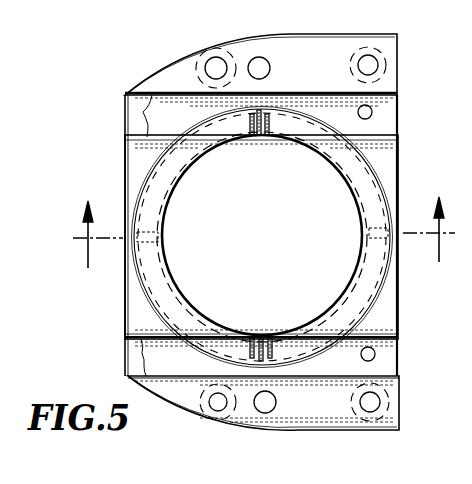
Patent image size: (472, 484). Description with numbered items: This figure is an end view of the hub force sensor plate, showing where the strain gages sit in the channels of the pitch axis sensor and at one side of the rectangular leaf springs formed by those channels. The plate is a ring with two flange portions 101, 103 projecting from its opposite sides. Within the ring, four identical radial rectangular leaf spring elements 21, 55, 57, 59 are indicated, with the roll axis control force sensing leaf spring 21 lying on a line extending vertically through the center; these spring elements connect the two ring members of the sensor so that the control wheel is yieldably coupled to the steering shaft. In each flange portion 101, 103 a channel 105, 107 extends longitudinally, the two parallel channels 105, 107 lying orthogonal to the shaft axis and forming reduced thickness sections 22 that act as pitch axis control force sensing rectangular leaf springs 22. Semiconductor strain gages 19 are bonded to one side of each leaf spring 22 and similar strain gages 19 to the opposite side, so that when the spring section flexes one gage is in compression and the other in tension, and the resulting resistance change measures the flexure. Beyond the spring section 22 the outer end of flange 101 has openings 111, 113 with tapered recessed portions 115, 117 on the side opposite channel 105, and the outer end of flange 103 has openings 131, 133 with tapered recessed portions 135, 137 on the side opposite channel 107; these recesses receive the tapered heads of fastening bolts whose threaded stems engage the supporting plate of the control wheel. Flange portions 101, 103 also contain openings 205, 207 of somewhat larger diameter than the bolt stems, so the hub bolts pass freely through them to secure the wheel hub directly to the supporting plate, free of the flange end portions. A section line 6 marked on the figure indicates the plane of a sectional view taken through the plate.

The section line 6- 6 is at (261, 232).
The semiconductor strain gages 19 is at (276, 118).
The roll axis control force sensing leaf spring 21 is at (372, 236).
The pitch axis control force sensing rectangular leaf spring 22 is at (384, 118).
The radial rectangular leaf spring element 55 is at (248, 122).
The radial rectangular leaf spring element 57 is at (160, 237).
The radial rectangular leaf spring element 59 is at (262, 336).
The flange portion 101 is at (340, 36).
The flange portion 103 is at (324, 433).
The channel 105 is at (143, 113).
The channel 107 is at (142, 353).
The opening 111 is at (376, 58).
The opening 113 is at (216, 60).
The tapered recessed portion 115 is at (384, 80).
The tapered recessed portion 117 is at (198, 62).
The opening 131 is at (371, 407).
The opening 133 is at (216, 408).
The tapered recessed portion 135 is at (392, 396).
The tapered recessed portion 137 is at (197, 408).
The opening 205 is at (262, 62).
The opening 207 is at (266, 408).